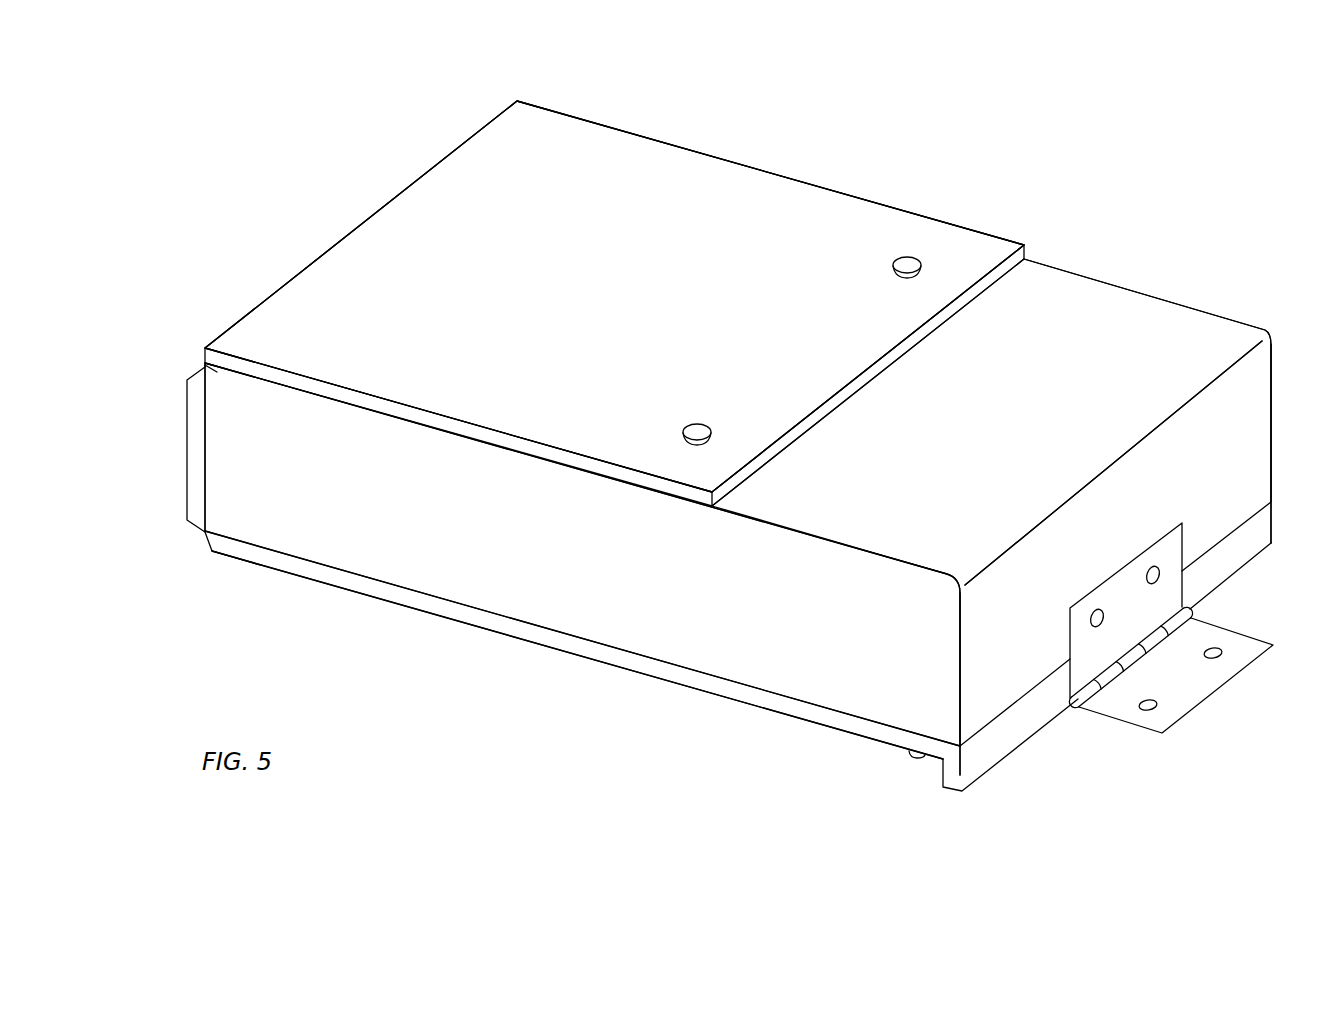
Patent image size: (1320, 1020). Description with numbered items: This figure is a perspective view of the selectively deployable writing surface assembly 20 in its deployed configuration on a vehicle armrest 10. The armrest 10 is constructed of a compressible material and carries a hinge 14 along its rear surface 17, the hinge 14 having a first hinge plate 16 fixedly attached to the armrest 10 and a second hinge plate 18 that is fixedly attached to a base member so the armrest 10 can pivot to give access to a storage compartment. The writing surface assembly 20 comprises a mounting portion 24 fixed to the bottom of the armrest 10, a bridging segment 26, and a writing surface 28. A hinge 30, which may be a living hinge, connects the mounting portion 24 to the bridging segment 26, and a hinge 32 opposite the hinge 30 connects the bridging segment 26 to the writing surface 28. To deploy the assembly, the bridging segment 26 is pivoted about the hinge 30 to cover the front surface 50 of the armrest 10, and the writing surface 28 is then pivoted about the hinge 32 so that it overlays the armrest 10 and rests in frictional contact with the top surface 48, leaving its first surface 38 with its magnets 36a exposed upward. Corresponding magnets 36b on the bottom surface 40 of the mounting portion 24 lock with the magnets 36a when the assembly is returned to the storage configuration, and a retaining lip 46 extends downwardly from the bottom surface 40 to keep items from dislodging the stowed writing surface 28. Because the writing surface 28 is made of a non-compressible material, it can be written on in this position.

The vehicle armrest 10 is at (1173, 180).
The hinge 14 is at (1192, 725).
The first hinge plate 16 is at (1170, 558).
The rear surface 17 is at (1240, 438).
The second hinge plate 18 is at (1242, 648).
The writing surface assembly 20 is at (673, 115).
The mounting portion 24 is at (667, 673).
The bridging segment 26 is at (187, 473).
The writing surface 28 is at (312, 313).
The hinge 30 is at (205, 352).
The hinge 32 is at (205, 533).
The magnets 36a is at (900, 257).
The magnets 36b is at (917, 762).
The first surface 38 is at (566, 268).
The bottom surface 40 is at (550, 648).
The retaining lip 46 is at (952, 770).
The top surface 48 is at (1000, 424).
The front surface 50 is at (187, 428).